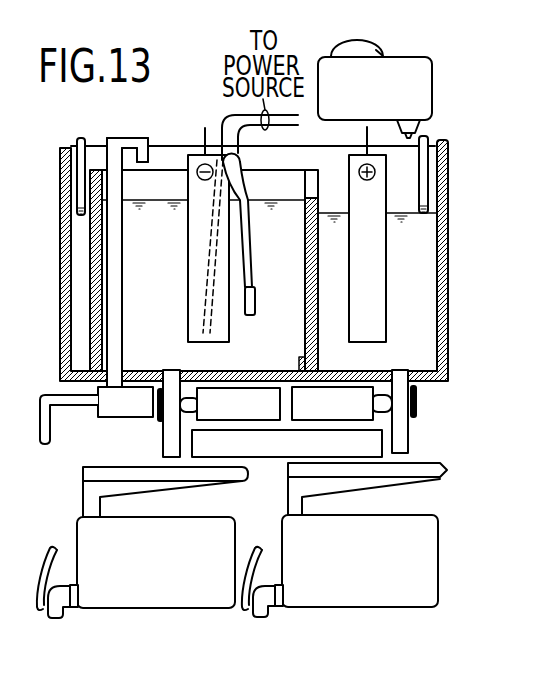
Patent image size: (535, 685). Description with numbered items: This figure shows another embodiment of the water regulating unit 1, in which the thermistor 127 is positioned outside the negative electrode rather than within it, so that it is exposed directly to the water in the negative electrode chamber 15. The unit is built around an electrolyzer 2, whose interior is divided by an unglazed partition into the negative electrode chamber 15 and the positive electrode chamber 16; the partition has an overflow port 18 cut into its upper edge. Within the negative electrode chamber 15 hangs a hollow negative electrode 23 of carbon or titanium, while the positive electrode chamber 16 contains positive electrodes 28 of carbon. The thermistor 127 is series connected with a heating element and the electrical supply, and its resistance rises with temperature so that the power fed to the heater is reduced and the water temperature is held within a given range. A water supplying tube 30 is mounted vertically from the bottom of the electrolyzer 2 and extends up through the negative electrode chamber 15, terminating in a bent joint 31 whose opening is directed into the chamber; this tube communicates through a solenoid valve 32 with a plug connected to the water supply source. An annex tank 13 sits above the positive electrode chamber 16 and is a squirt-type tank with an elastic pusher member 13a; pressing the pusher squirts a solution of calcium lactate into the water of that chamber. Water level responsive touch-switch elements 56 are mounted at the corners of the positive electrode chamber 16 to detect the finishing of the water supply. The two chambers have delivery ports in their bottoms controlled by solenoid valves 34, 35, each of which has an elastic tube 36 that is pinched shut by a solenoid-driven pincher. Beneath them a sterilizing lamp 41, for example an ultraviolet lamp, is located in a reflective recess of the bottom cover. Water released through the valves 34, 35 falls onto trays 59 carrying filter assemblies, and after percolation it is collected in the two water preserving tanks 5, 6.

The water regulating unit 1 is at (460, 244).
The electrolyzer 2 is at (447, 163).
The water preserving tank 5 is at (160, 598).
The water preserving tank 6 is at (340, 597).
The annex tank 13 is at (423, 80).
The elastic pusher member 13a is at (332, 50).
The negative electrode chamber 15 is at (159, 356).
The positive electrode chamber 16 is at (419, 344).
The overflow port 18 is at (309, 182).
The negative electrode 23 is at (193, 292).
The positive electrode 28 is at (383, 271).
The water supplying tube 30 is at (119, 238).
The bent joint 31 is at (132, 142).
The solenoid valve 32 is at (124, 405).
The solenoid valve 34 is at (245, 397).
The solenoid valve 35 is at (345, 397).
The elastic tube 36 is at (166, 448).
The sterilizing lamp 41 is at (263, 451).
The water level responsive touch-switch element 56 is at (82, 167).
The tray 59 is at (447, 472).
The thermistor 127 is at (255, 302).